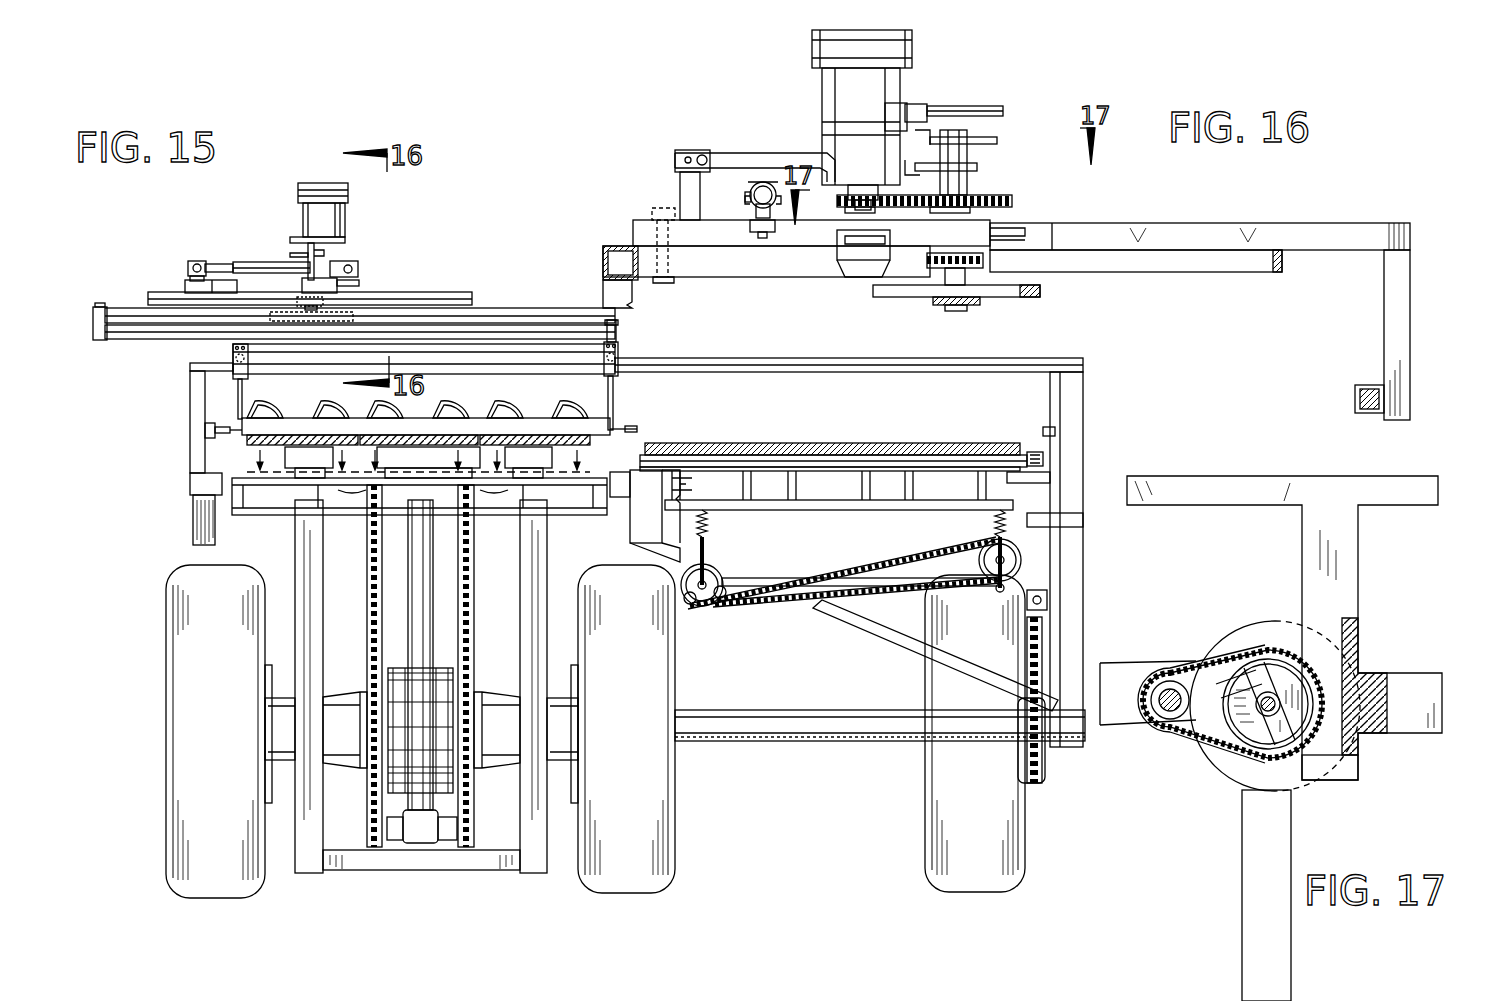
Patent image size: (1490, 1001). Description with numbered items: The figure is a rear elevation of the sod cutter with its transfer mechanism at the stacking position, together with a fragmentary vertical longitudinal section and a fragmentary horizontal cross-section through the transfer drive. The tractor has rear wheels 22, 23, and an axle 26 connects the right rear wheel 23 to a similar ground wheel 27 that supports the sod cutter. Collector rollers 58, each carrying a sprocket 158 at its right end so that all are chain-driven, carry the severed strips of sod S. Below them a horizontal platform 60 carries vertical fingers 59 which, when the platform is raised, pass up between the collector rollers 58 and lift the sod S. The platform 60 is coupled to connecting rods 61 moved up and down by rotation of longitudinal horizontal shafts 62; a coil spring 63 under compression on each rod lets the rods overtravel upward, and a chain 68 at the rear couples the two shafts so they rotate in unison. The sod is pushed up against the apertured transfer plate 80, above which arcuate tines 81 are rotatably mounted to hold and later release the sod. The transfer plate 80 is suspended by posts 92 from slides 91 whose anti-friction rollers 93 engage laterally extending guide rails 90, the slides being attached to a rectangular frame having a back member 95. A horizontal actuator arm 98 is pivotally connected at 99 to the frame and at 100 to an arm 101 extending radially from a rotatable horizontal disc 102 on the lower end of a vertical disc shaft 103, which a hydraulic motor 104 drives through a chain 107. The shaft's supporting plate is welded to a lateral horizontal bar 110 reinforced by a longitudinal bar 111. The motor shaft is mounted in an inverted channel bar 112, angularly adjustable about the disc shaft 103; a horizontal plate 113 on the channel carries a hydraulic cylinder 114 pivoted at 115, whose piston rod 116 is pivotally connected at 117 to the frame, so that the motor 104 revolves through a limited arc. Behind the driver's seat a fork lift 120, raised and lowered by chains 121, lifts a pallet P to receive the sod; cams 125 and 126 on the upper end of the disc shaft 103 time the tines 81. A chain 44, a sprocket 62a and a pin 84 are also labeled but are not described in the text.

In FIG. 15, the rear wheel 22 is at (165, 770).
In FIG. 15, the right rear wheel 23 is at (676, 786).
In FIG. 15, the axle 26 is at (807, 733).
In FIG. 15, the ground wheel 27 is at (925, 843).
In FIG. 15, the drive chain 44 is at (1042, 644).
In FIG. 15, the collector roller 58 is at (1003, 454).
In FIG. 15, the vertical finger 59 is at (740, 484).
In FIG. 15, the horizontal platform 60 is at (840, 505).
In FIG. 15, the connecting rod 61 is at (706, 545).
In FIG. 15, the horizontal shaft 62 is at (1020, 560).
In FIG. 15, the sprocket 62a is at (708, 565).
In FIG. 15, the coil spring 63 is at (998, 514).
In FIG. 15, the chain 68 is at (872, 568).
In FIG. 15, the transfer plate 80 is at (605, 420).
In FIG. 15, the arcuate tines 81 is at (279, 405).
In FIG. 15, the pivot pin 84 is at (233, 434).
In FIG. 15, the guide rail 90 is at (822, 358).
In FIG. 15, the slide 91 is at (232, 354).
In FIG. 15, the post 92 is at (613, 386).
In FIG. 15, the anti-friction roller 93 is at (618, 352).
In FIG. 15, the back member 95 is at (545, 343).
In FIG. 15, the actuator arm 98 is at (505, 330).
In FIG. 15, the pivotal connection 99 is at (616, 332).
In FIG. 15, the pivotal connection 100 is at (97, 334).
In FIG. 15, the arm 101 is at (140, 310).
In FIG. 16, the arm 101 is at (975, 300).
In FIG. 17, the arm 101 is at (1245, 848).
In FIG. 15, the rotatable horizontal disc 102 is at (353, 318).
In FIG. 16, the rotatable horizontal disc 102 is at (1030, 298).
In FIG. 17, the rotatable horizontal disc 102 is at (1212, 775).
In FIG. 16, the disc shaft 103 is at (975, 262).
In FIG. 17, the disc shaft 103 is at (1270, 692).
In FIG. 15, the hydraulic motor 104 is at (300, 196).
In FIG. 16, the hydraulic motor 104 is at (822, 84).
In FIG. 16, the chain 107 is at (985, 196).
In FIG. 17, the chain 107 is at (1210, 666).
In FIG. 16, the horizontal bar 110 is at (1030, 228).
In FIG. 17, the horizontal bar 110 is at (1350, 776).
In FIG. 16, the longitudinal bar 111 is at (1260, 226).
In FIG. 17, the longitudinal bar 111 is at (1402, 676).
In FIG. 15, the inverted channel bar 112 is at (302, 288).
In FIG. 16, the inverted channel bar 112 is at (740, 244).
In FIG. 17, the inverted channel bar 112 is at (1134, 710).
In FIG. 15, the horizontal plate 113 is at (361, 284).
In FIG. 16, the horizontal plate 113 is at (790, 232).
In FIG. 15, the hydraulic cylinder 114 is at (282, 268).
In FIG. 16, the hydraulic cylinder 114 is at (765, 180).
In FIG. 15, the pivot 115 is at (350, 264).
In FIG. 16, the pivot 115 is at (746, 198).
In FIG. 15, the piston rod 116 is at (214, 263).
In FIG. 15, the pivotal connection 117 is at (190, 262).
In FIG. 15, the fork lift 120 is at (352, 497).
In FIG. 15, the chain 121 is at (366, 606).
In FIG. 16, the cam 125 is at (978, 165).
In FIG. 17, the cam 125 is at (1240, 672).
In FIG. 16, the cam 126 is at (985, 138).
In FIG. 17, the cam 126 is at (1258, 737).
In FIG. 15, the sprocket 158 is at (1046, 458).
In FIG. 15, the pallet P is at (260, 512).
In FIG. 15, the sod S is at (292, 432).